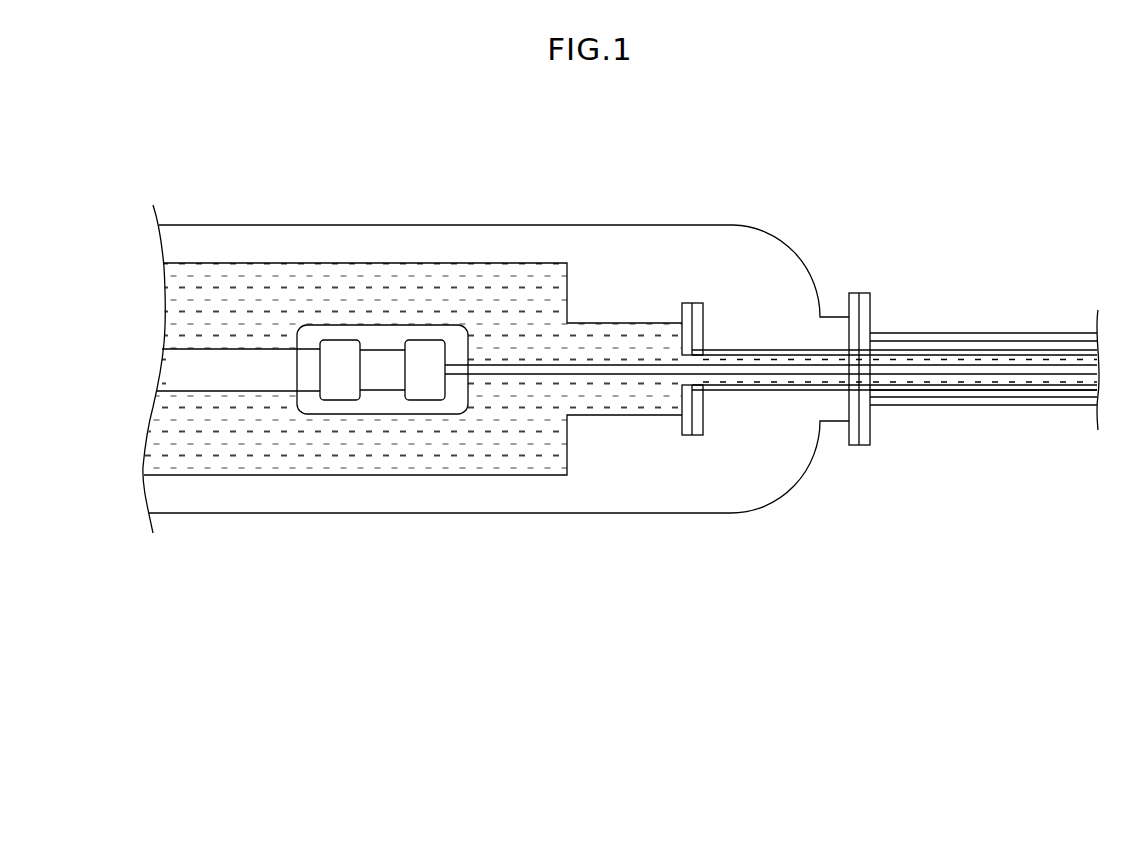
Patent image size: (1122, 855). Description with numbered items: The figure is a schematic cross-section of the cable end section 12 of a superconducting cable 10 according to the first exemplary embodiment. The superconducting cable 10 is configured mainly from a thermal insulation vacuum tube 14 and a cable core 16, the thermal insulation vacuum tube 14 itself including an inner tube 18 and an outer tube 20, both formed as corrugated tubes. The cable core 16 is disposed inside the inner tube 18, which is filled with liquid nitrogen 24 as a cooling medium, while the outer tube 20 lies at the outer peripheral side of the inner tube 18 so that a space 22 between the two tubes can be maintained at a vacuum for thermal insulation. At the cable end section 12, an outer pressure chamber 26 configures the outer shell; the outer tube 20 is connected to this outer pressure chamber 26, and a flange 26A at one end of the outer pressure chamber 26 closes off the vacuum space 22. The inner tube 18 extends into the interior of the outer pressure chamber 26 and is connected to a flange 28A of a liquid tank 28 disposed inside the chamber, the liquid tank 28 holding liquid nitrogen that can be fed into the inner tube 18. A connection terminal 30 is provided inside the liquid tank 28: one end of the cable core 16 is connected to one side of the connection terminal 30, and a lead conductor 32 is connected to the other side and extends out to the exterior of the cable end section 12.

The superconducting cable 10 is at (1038, 287).
The cable end section 12 is at (523, 198).
The thermal insulation vacuum tube 14 is at (972, 333).
The cable core 16 is at (772, 350).
The inner tube 18 is at (777, 391).
The outer tube 20 is at (913, 405).
The space 22 is at (1050, 394).
The liquid nitrogen 24 is at (375, 476).
The outer pressure chamber 26 is at (655, 224).
The flange 26A is at (872, 310).
The liquid tank 28 is at (537, 478).
The flange 28A is at (704, 421).
The connection terminal 30 is at (383, 347).
The lead conductor 32 is at (234, 335).